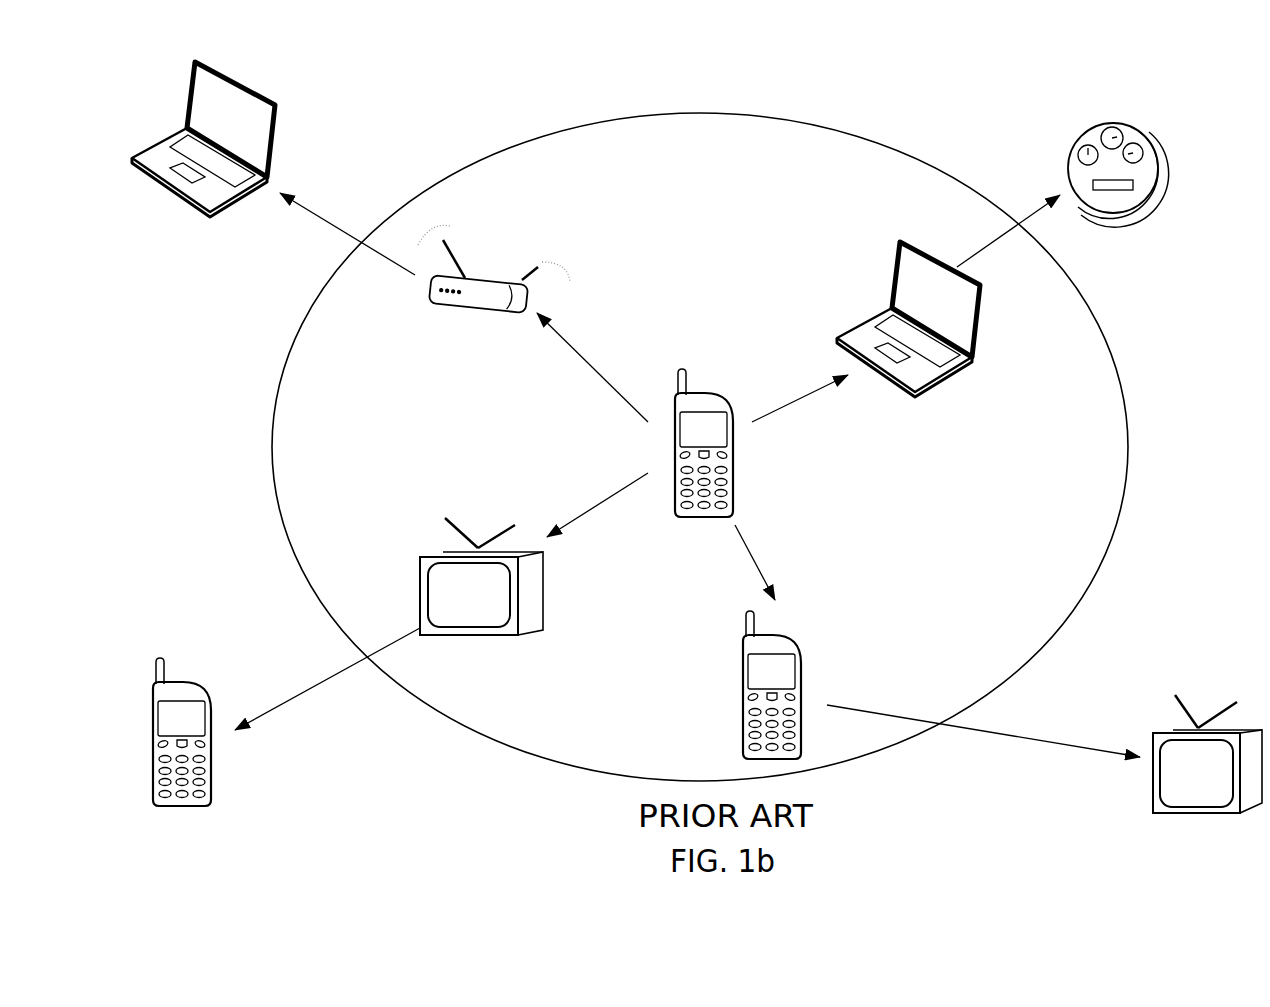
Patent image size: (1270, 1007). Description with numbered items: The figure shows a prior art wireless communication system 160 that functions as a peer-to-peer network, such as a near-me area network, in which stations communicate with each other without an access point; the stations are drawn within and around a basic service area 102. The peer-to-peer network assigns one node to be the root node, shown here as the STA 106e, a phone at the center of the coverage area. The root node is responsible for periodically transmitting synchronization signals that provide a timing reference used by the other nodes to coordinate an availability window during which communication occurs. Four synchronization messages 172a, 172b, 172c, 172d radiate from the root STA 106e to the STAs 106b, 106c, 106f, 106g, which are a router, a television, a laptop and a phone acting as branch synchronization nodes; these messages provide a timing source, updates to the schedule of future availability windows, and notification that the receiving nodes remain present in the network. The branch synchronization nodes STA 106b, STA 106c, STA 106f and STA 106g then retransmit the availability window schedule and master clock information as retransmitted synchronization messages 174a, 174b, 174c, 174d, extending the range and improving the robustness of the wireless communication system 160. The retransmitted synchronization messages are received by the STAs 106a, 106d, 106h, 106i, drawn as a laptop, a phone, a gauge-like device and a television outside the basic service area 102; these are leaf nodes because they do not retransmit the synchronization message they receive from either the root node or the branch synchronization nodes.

The basic service area 102 is at (1130, 445).
The wireless communication system 160 is at (915, 120).
The STA 106a is at (292, 113).
The STA 106b is at (503, 265).
The STA 106c is at (497, 525).
The STA 106d is at (192, 682).
The STA 106e is at (733, 398).
The STA 106f is at (908, 243).
The STA 106g is at (812, 633).
The STA 106h is at (1165, 143).
The STA 106i is at (1198, 707).
The synchronization message 172a is at (598, 373).
The synchronization message 172b is at (623, 487).
The synchronization message 172c is at (753, 558).
The synchronization message 172d is at (787, 403).
The retransmitted synchronization message 174a is at (328, 220).
The retransmitted synchronization message 174b is at (307, 692).
The retransmitted synchronization message 174c is at (1067, 747).
The retransmitted synchronization message 174d is at (1003, 240).